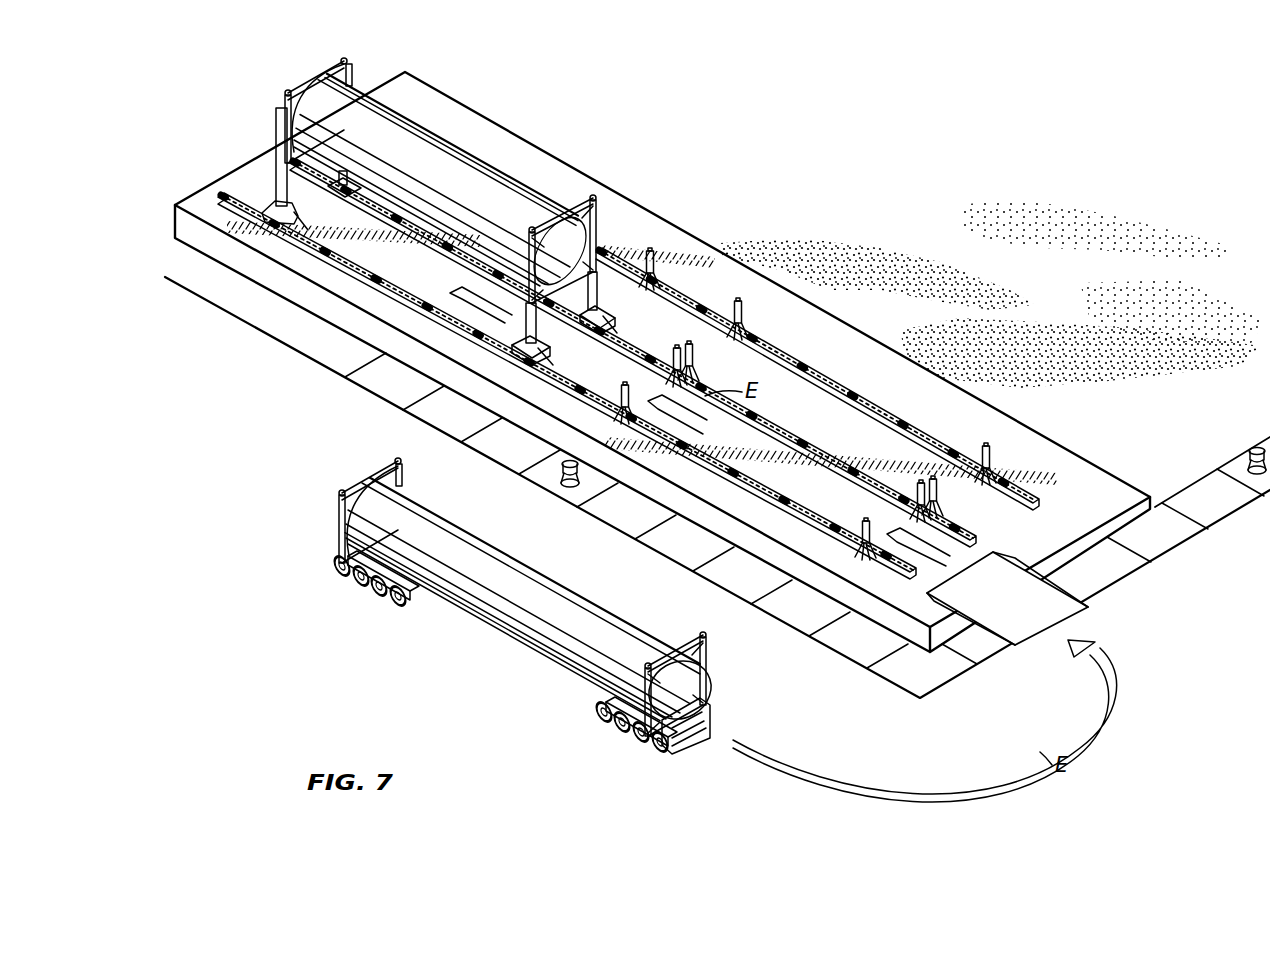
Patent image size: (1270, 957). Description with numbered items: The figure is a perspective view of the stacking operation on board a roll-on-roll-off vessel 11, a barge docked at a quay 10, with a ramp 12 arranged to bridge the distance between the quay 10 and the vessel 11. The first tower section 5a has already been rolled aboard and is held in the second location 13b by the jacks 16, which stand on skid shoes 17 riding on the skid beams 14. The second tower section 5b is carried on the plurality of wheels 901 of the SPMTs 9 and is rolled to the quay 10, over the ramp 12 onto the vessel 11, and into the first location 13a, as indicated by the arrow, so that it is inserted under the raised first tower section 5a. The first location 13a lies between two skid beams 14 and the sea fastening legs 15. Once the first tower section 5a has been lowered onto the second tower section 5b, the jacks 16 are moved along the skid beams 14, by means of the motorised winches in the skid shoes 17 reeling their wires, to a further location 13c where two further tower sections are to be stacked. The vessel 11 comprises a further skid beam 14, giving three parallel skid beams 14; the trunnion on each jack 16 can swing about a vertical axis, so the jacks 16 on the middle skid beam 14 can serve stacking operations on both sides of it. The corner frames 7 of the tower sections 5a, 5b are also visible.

The first tower section 5a is at (469, 397).
The second tower section 5b is at (510, 624).
The corner frame of container 7 is at (294, 90).
The SPMT 9 is at (338, 554).
The wheel 901 is at (365, 585).
The quay 10 is at (826, 701).
The RoRo vessel 11 is at (831, 348).
The ramp 12 is at (1045, 612).
The first location 13a is at (567, 386).
The second location 13b is at (633, 353).
The further location 13c is at (817, 379).
The skid beam 14 is at (736, 470).
The sea fastening leg 15 is at (651, 253).
The jack 16 is at (274, 165).
The skid shoe 17 is at (284, 205).